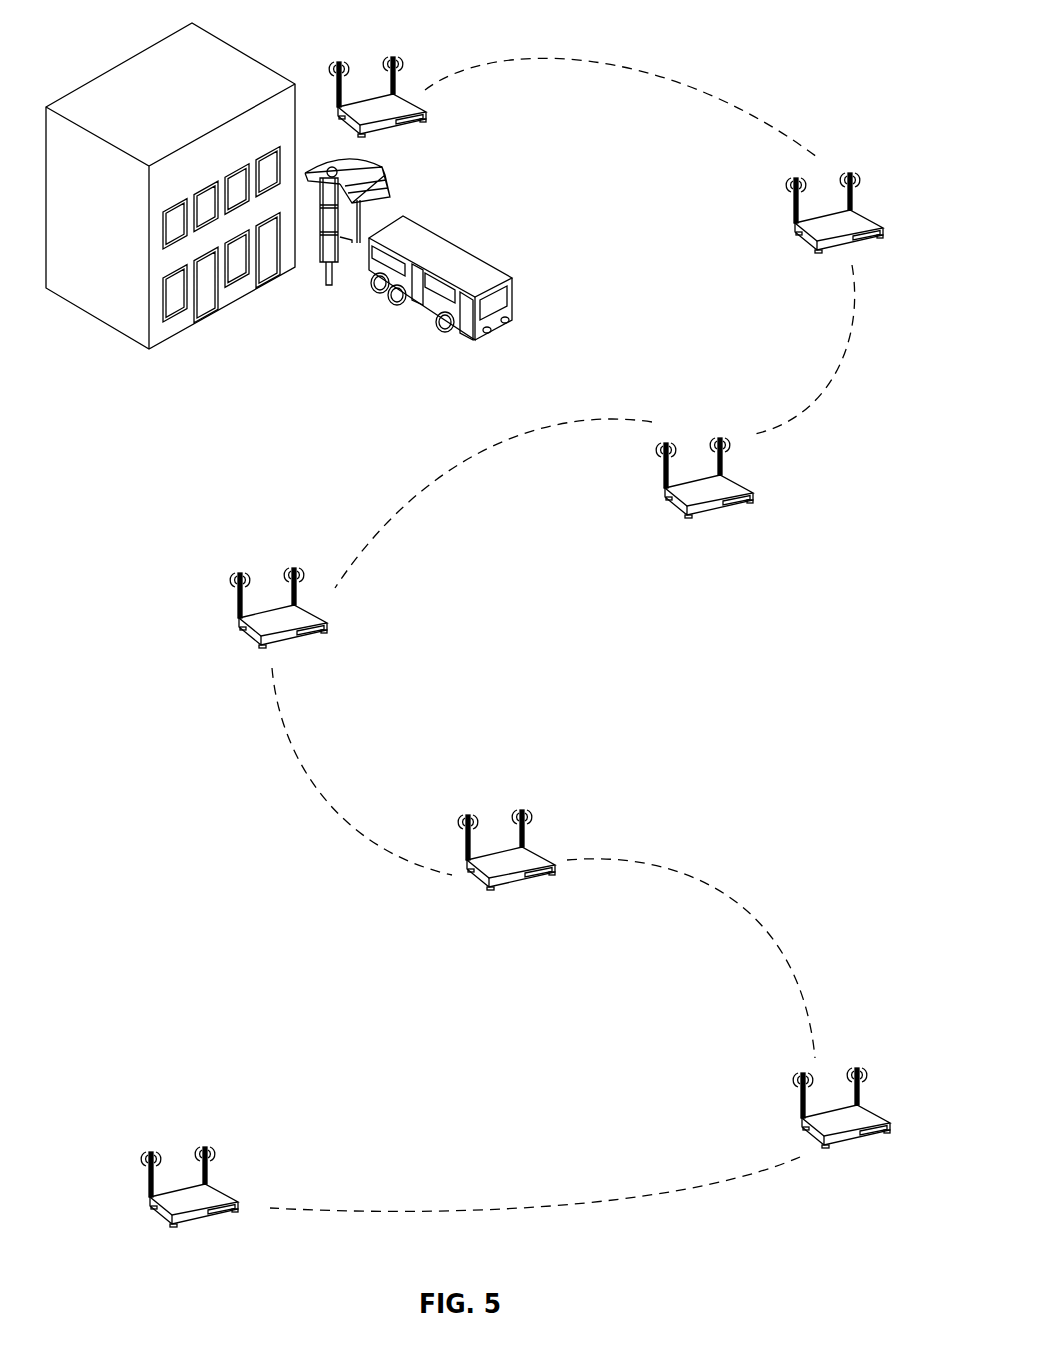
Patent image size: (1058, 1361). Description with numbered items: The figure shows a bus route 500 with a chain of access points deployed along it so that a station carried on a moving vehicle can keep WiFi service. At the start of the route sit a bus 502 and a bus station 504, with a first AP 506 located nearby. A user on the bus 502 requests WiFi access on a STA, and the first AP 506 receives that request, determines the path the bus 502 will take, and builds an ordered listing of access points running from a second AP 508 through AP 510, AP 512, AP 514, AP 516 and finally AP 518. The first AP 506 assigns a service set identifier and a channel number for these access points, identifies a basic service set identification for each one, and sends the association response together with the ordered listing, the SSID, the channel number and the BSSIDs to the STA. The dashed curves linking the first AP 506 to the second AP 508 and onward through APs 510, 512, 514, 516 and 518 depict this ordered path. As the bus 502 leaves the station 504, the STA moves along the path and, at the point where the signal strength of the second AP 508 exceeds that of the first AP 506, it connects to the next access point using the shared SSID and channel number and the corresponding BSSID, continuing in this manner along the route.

The bus route 500 is at (806, 43).
The bus 502 is at (475, 342).
The bus station 504 is at (330, 285).
The first AP 506 is at (408, 97).
The second AP 508 is at (798, 243).
The AP 510 is at (672, 513).
The AP 512 is at (242, 638).
The AP 514 is at (470, 878).
The AP 516 is at (800, 1128).
The AP 518 is at (148, 1205).